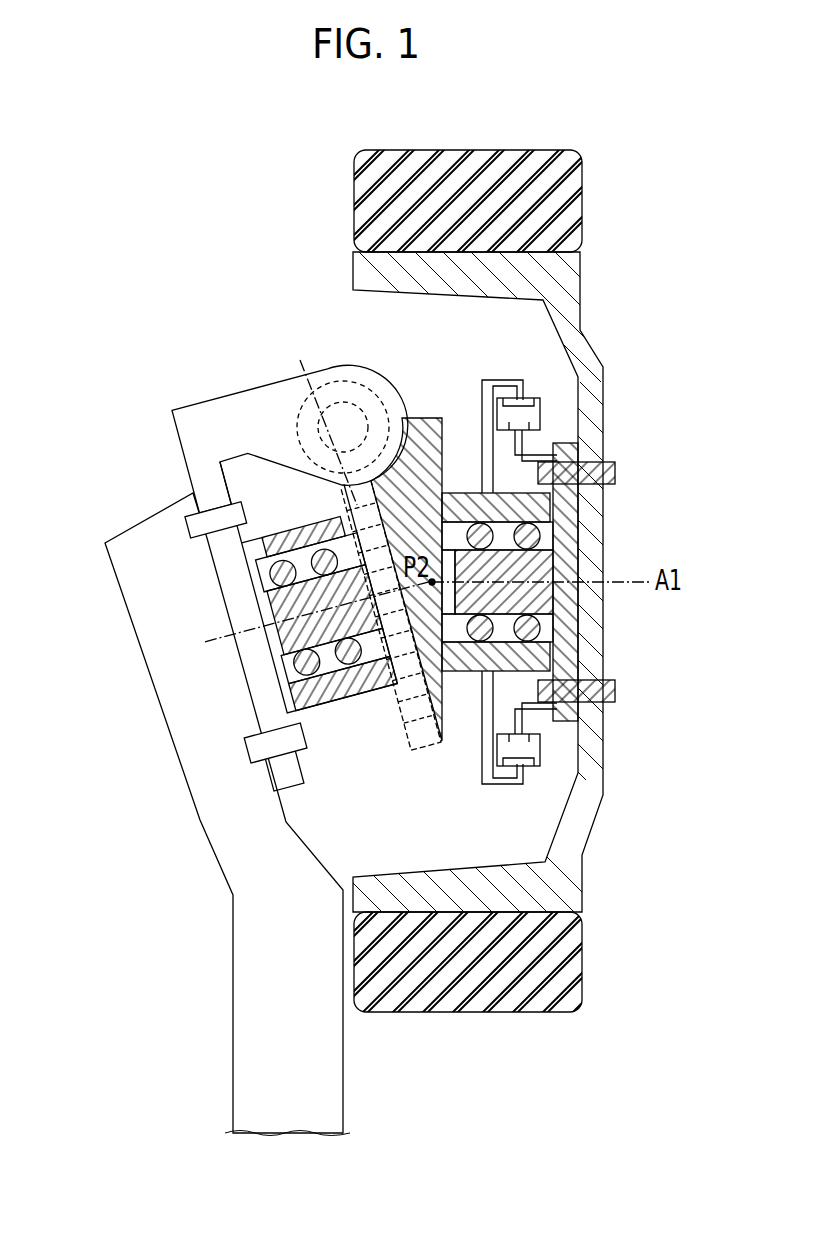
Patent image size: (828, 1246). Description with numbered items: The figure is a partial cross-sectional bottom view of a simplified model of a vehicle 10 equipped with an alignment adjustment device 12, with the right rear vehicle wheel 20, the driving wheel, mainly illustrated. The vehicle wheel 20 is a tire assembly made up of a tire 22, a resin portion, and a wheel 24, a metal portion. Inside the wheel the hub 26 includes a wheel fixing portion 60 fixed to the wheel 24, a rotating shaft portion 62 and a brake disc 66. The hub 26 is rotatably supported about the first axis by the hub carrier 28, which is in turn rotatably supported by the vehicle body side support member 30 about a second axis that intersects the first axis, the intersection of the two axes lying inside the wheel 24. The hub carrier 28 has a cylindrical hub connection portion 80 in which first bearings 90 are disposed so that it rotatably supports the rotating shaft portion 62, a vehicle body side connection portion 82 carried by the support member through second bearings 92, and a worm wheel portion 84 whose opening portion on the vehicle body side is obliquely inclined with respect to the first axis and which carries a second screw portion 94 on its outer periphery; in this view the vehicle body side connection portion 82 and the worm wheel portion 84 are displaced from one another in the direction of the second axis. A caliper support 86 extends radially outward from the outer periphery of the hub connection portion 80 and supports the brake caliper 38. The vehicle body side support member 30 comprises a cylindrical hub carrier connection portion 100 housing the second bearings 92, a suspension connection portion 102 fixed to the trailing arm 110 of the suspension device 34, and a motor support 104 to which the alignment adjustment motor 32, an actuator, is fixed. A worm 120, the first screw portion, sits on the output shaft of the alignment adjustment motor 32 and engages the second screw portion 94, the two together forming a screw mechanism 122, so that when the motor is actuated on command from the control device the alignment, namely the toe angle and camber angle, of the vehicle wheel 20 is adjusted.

The vehicle 10 is at (248, 194).
The alignment adjustment device 12 is at (257, 532).
The vehicle wheel 20 is at (502, 582).
The tire 22 is at (575, 200).
The wheel 24 is at (536, 590).
The hub 26 is at (578, 555).
The hub carrier 28 is at (407, 598).
The vehicle body side support member 30 is at (324, 573).
The alignment adjustment motor 32 is at (370, 387).
The suspension device 34 is at (213, 814).
The trailing arm 110 is at (153, 697).
The brake caliper 38 is at (569, 555).
The wheel fixing portion 60 is at (565, 657).
The rotating shaft portion 62 is at (505, 598).
The brake disc 66 is at (562, 697).
The hub connection portion 80 is at (455, 672).
The vehicle body side connection portion 82 is at (325, 610).
The worm wheel portion 84 is at (434, 418).
The caliper support 86 is at (502, 382).
The first bearings 90 is at (545, 538).
The second bearings 92 is at (315, 612).
The second screw portion 94 is at (325, 400).
The hub carrier connection portion 100 is at (308, 572).
The suspension connection portion 102 is at (250, 648).
The motor support 104 is at (296, 439).
The worm 120 is at (340, 382).
The screw mechanism 122 is at (336, 385).